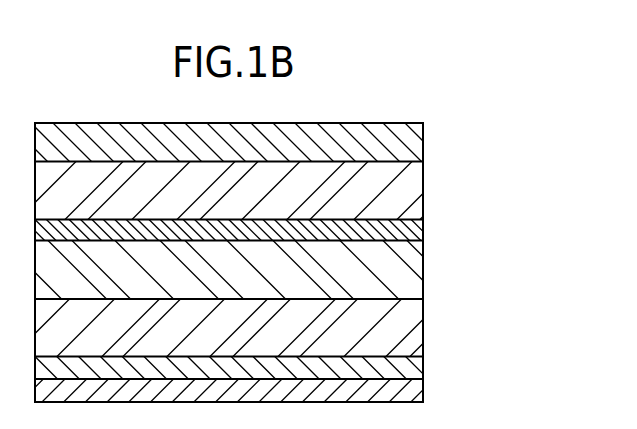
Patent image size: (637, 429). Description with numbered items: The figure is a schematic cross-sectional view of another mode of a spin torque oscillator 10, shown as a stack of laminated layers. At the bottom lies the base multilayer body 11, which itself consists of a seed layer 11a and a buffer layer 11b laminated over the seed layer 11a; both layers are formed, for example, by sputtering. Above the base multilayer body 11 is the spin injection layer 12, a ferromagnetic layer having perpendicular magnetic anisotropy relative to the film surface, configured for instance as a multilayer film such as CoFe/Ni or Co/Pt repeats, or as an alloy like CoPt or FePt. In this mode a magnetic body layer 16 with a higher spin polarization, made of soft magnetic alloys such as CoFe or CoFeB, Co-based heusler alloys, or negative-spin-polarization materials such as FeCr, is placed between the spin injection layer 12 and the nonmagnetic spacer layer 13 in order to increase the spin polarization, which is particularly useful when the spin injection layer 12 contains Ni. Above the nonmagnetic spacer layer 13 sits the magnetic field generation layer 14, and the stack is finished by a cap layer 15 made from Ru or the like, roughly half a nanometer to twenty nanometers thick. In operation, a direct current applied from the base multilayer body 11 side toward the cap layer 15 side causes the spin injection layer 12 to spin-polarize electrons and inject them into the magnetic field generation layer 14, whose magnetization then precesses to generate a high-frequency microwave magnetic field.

The spin torque oscillator 10 is at (408, 109).
The base multilayer body 11 is at (280, 379).
The seed layer 11a is at (415, 392).
The buffer layer 11b is at (415, 363).
The spin injection layer 12 is at (415, 327).
The nonmagnetic spacer layer 13 is at (415, 232).
The magnetic field generation layer 14 is at (417, 190).
The cap layer 15 is at (415, 150).
The magnetic body layer 16 is at (417, 270).